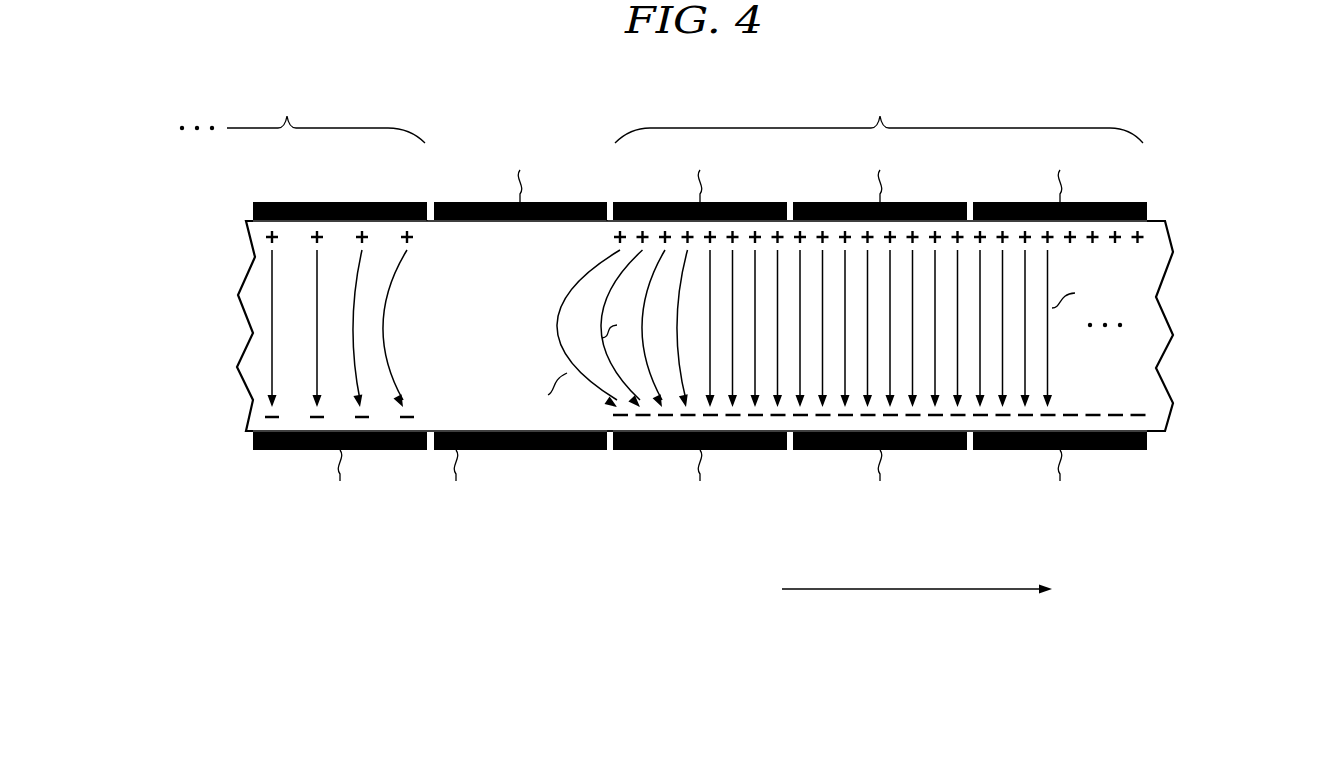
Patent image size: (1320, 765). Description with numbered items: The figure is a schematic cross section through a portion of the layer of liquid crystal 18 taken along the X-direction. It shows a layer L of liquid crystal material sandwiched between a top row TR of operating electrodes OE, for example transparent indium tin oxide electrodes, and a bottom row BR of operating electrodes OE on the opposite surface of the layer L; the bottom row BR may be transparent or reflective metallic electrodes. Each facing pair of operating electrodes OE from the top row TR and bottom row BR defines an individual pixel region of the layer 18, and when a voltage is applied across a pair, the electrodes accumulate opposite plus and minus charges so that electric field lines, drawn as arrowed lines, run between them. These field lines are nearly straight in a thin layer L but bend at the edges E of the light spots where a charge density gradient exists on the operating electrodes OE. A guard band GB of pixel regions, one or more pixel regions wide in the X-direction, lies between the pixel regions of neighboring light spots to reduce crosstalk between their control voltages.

The layer of liquid crystal 18 is at (695, 360).
The top row of operating electrodes TR is at (761, 182).
The bottom row of operating electrodes BR is at (1157, 441).
The operating electrode OE is at (340, 202).
The edge of light spot E is at (520, 329).
The guard band GB is at (520, 477).
The layer of liquid crystal material L is at (1190, 222).